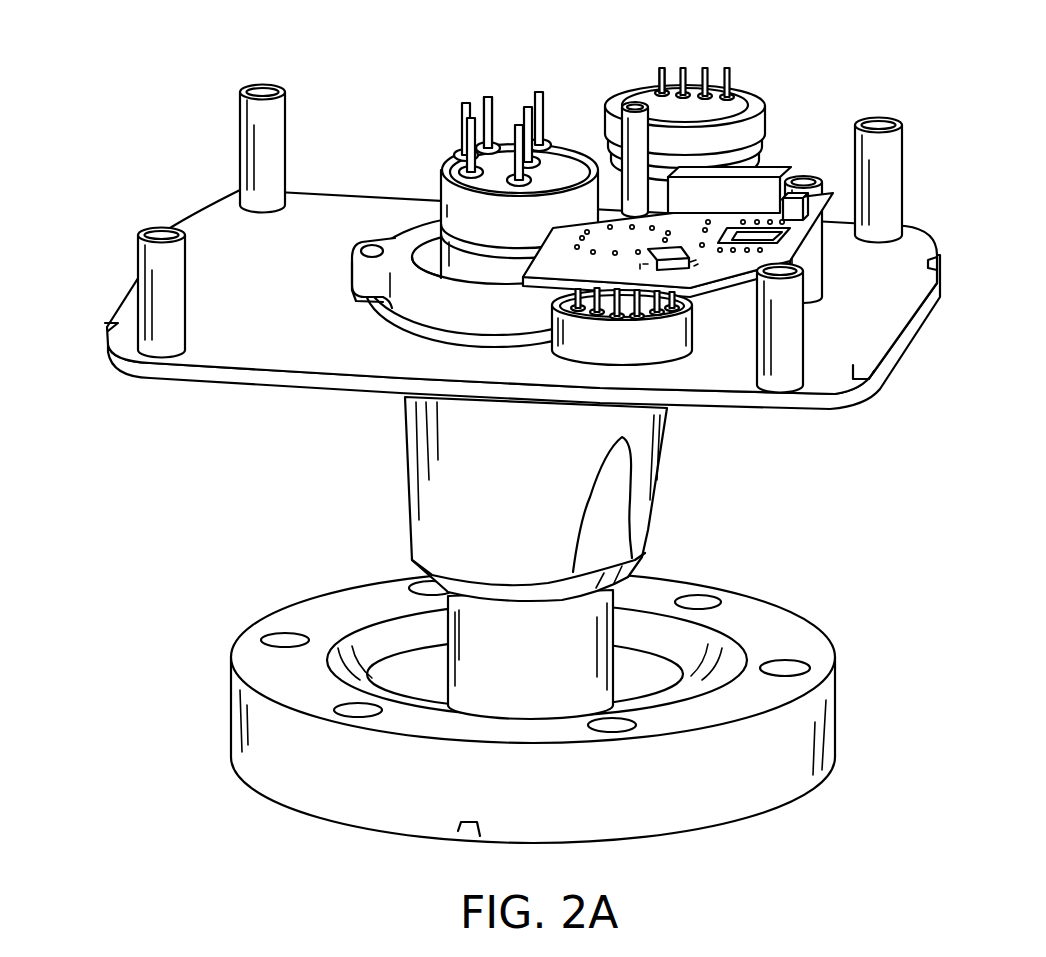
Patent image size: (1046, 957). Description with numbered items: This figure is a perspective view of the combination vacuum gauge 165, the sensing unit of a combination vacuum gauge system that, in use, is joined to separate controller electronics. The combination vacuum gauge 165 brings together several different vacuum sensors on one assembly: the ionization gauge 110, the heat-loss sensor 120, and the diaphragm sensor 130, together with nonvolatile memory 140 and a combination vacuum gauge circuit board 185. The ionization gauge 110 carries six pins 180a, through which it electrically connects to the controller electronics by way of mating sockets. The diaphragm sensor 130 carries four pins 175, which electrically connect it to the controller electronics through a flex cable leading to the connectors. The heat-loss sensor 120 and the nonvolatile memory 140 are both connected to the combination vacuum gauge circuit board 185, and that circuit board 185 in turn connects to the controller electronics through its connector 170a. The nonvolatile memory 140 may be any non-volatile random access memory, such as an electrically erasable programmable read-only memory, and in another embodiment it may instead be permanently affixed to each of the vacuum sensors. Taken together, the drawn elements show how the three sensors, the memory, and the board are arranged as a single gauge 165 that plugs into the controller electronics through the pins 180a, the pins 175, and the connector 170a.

The combination vacuum gauge 165 is at (487, 423).
The ionization gauge 110 is at (445, 176).
The pins 180a is at (487, 99).
The pins 175 is at (662, 67).
The diaphragm sensor 130 is at (750, 84).
The connector 170a is at (781, 176).
The combination vacuum gauge circuit board 185 is at (828, 223).
The nonvolatile memory 140 is at (690, 264).
The heat-loss sensor 120 is at (655, 360).